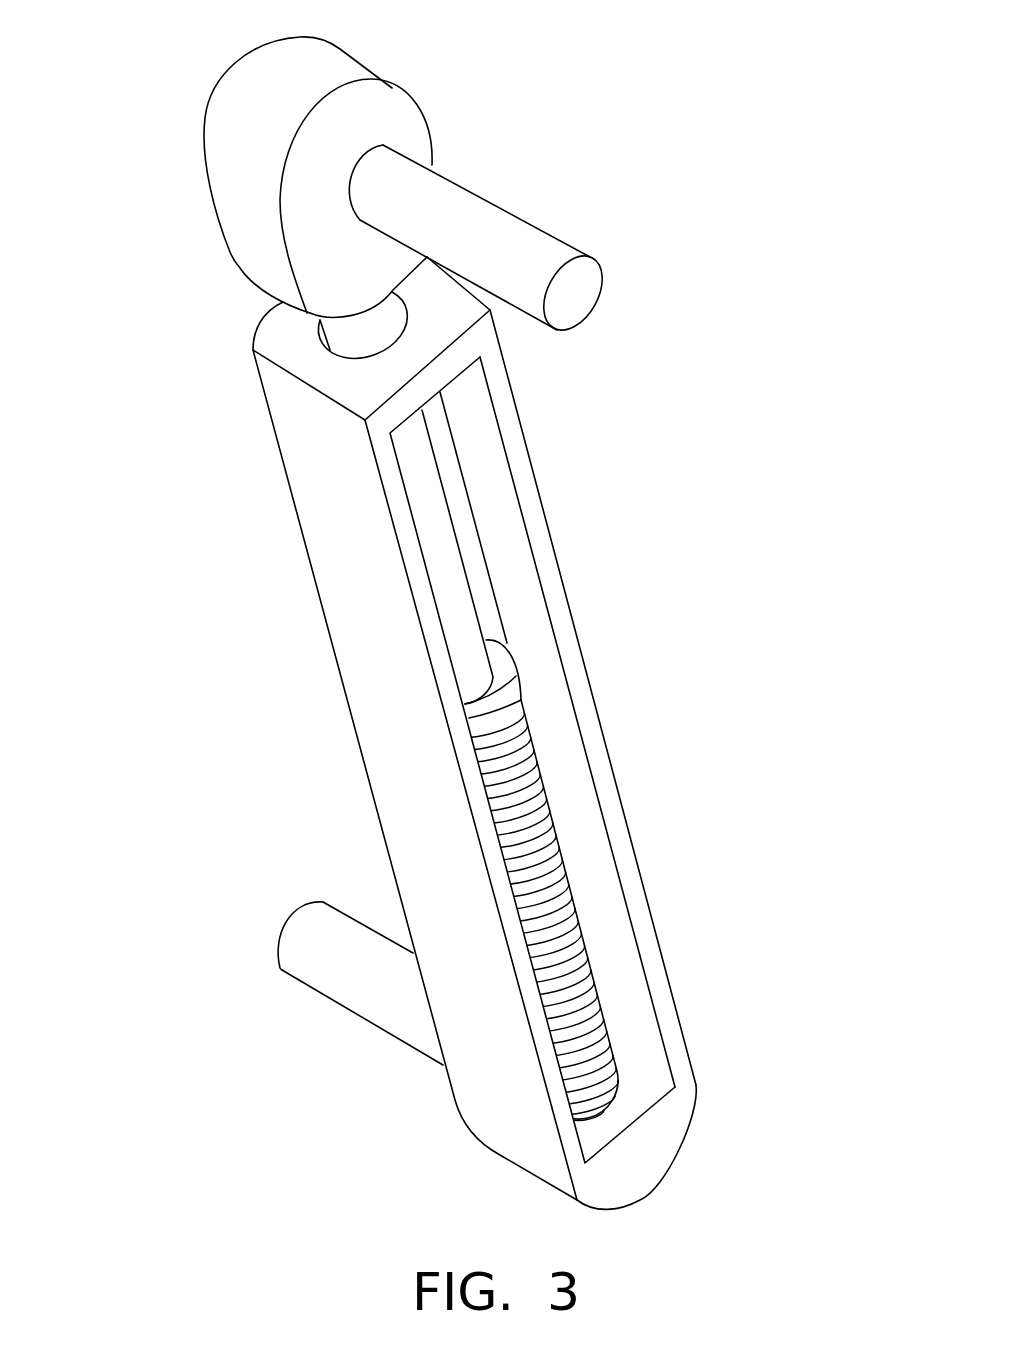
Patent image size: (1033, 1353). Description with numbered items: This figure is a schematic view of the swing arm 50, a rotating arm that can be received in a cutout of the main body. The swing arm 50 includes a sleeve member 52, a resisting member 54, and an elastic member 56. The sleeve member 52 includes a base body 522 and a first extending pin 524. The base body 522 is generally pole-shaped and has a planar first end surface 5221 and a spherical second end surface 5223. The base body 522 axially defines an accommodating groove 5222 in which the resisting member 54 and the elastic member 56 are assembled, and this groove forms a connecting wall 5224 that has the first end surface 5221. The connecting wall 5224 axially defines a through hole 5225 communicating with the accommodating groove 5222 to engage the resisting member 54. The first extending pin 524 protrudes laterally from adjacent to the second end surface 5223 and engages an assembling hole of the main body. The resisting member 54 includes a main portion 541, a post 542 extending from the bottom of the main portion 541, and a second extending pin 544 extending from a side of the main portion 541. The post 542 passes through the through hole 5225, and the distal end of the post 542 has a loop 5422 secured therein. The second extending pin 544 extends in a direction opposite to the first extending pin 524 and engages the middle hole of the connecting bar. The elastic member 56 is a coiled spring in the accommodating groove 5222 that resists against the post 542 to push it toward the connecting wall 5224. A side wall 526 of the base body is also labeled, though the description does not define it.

The swing arm 50 is at (455, 42).
The sleeve member 52 is at (235, 757).
The base body 522 is at (483, 460).
The first end surface 5221 is at (288, 353).
The accommodating groove 5222 is at (642, 1040).
The second end surface 5223 is at (667, 1172).
The connecting wall 5224 is at (448, 366).
The through hole 5225 is at (322, 330).
The first extending pin 524 is at (320, 948).
The side wall 526 is at (650, 945).
The resisting member 54 is at (622, 62).
The main portion 541 is at (377, 125).
The post 542 is at (370, 322).
The loop 5422 is at (510, 708).
The second extending pin 544 is at (530, 253).
The elastic member 56 is at (540, 828).